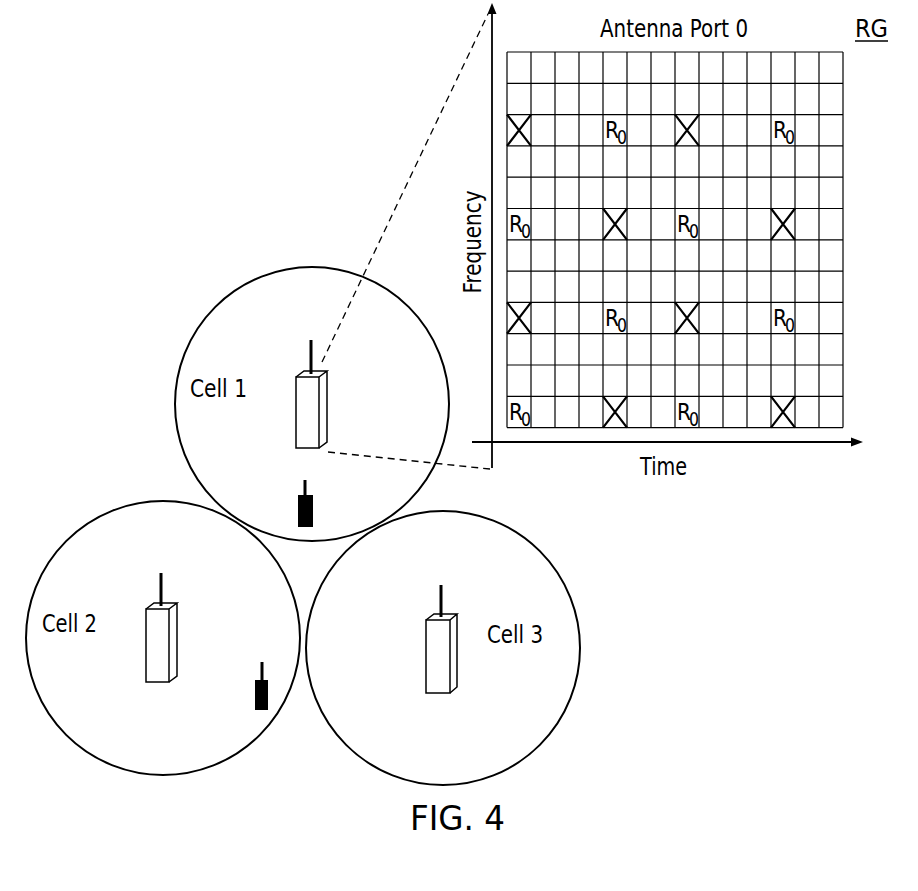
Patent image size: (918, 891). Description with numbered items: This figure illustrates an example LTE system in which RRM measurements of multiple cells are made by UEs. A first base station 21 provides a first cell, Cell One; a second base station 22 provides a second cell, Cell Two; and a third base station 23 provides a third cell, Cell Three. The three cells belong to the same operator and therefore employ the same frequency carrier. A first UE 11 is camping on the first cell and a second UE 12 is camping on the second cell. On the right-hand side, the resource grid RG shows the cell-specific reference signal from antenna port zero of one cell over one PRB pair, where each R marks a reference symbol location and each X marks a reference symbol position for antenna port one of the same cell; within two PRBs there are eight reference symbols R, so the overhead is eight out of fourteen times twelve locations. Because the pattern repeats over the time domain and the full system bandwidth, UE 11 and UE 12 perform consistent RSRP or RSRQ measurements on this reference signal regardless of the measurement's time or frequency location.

The first UE 11 is at (290, 503).
The second UE 12 is at (245, 686).
The first base station 21 is at (292, 394).
The second base station 22 is at (143, 627).
The third base station 23 is at (423, 639).